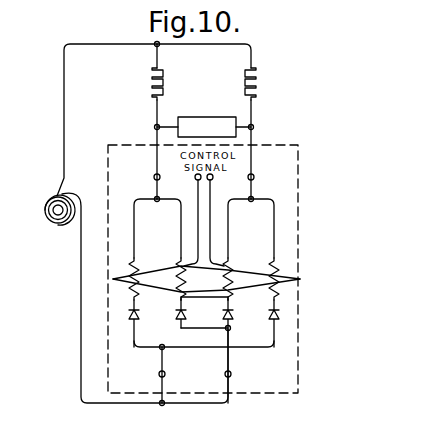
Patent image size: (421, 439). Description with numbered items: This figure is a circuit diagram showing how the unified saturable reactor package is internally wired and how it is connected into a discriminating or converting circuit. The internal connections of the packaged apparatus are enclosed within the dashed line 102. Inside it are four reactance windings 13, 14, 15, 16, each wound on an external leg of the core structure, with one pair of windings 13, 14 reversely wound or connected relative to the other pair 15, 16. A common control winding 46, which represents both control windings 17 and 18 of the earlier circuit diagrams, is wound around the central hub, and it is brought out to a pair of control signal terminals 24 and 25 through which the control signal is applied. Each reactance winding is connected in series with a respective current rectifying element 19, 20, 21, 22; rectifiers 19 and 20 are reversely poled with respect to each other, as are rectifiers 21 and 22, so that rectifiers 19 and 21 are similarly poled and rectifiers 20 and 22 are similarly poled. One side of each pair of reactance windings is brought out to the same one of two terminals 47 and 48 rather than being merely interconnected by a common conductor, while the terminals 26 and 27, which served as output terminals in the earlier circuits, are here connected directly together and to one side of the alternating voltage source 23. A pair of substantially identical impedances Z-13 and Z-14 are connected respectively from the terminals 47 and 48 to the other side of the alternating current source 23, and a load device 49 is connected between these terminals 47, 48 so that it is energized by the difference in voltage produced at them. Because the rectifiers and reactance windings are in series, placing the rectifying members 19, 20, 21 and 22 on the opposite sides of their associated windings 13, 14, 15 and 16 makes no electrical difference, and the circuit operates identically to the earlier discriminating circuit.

The alternating voltage source 23 is at (43, 210).
The impedance Z-13 is at (152, 94).
The impedance Z-14 is at (256, 92).
The load device 49 is at (204, 117).
The terminal 47 is at (154, 177).
The terminal 48 is at (254, 177).
The control signal terminal 24 is at (195, 179).
The control signal terminal 25 is at (213, 179).
The dashed line 102 is at (298, 198).
The reactance winding 13 is at (134, 258).
The reactance winding 14 is at (181, 258).
The reactance winding 15 is at (228, 258).
The reactance winding 16 is at (274, 258).
The control winding 17 is at (206, 278).
The control winding 18 is at (206, 285).
The common control winding 46 is at (181, 296).
The current rectifying element 19 is at (131, 316).
The current rectifying element 20 is at (177, 316).
The current rectifying element 21 is at (225, 318).
The current rectifying element 22 is at (272, 316).
The terminal 26 is at (159, 374).
The terminal 27 is at (231, 374).